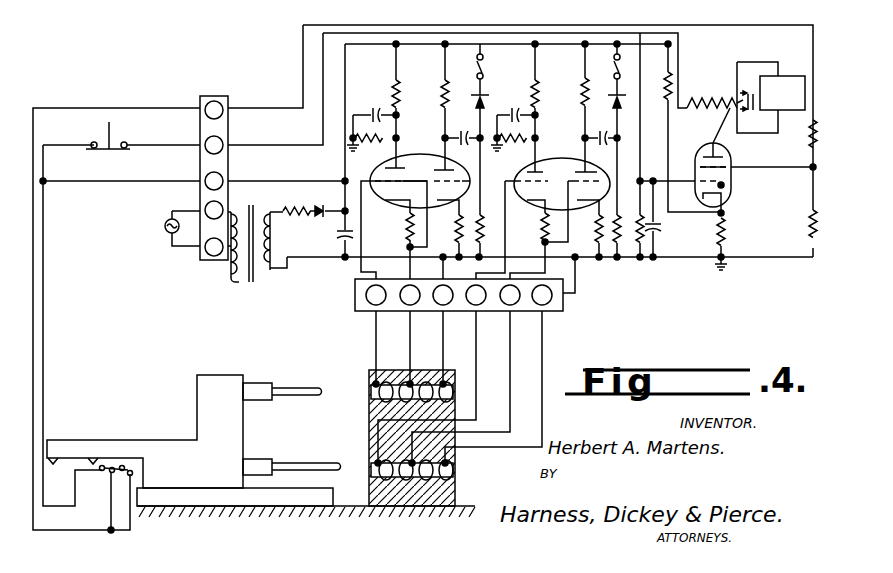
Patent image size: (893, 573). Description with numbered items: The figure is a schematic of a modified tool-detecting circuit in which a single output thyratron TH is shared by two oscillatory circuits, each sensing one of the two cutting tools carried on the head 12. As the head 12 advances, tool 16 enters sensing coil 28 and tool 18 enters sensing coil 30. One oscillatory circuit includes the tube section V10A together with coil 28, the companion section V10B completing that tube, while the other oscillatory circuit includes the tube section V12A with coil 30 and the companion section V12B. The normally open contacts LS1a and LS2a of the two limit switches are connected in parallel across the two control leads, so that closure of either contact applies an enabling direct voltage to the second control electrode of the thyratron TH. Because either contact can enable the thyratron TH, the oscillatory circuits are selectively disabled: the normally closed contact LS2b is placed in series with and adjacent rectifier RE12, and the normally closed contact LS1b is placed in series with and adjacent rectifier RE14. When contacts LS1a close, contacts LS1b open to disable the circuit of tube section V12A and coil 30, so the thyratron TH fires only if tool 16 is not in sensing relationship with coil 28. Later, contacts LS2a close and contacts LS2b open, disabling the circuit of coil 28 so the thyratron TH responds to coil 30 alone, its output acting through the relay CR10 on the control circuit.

The normally closed contact of limit switch LS2 LS2b is at (482, 62).
The normally closed contact of limit switch LS1 LS1b is at (619, 62).
The control relay CR10 is at (701, 92).
The rectifier RE12 is at (484, 105).
The rectifier RE14 is at (621, 108).
The thyratron TH is at (733, 155).
The tube section V10B is at (455, 157).
The tube section V10A is at (386, 201).
The tube section V12B is at (598, 160).
The tube section V12A is at (522, 160).
The sensing coil 28 is at (455, 392).
The sensing coil 30 is at (455, 470).
The head 12 is at (197, 393).
The cutting tool 16 is at (283, 386).
The cutting tool 18 is at (292, 462).
The normally open contact of limit switch LS2 LS2a is at (135, 472).
The normally open contact of limit switch LS1 LS1a is at (105, 476).